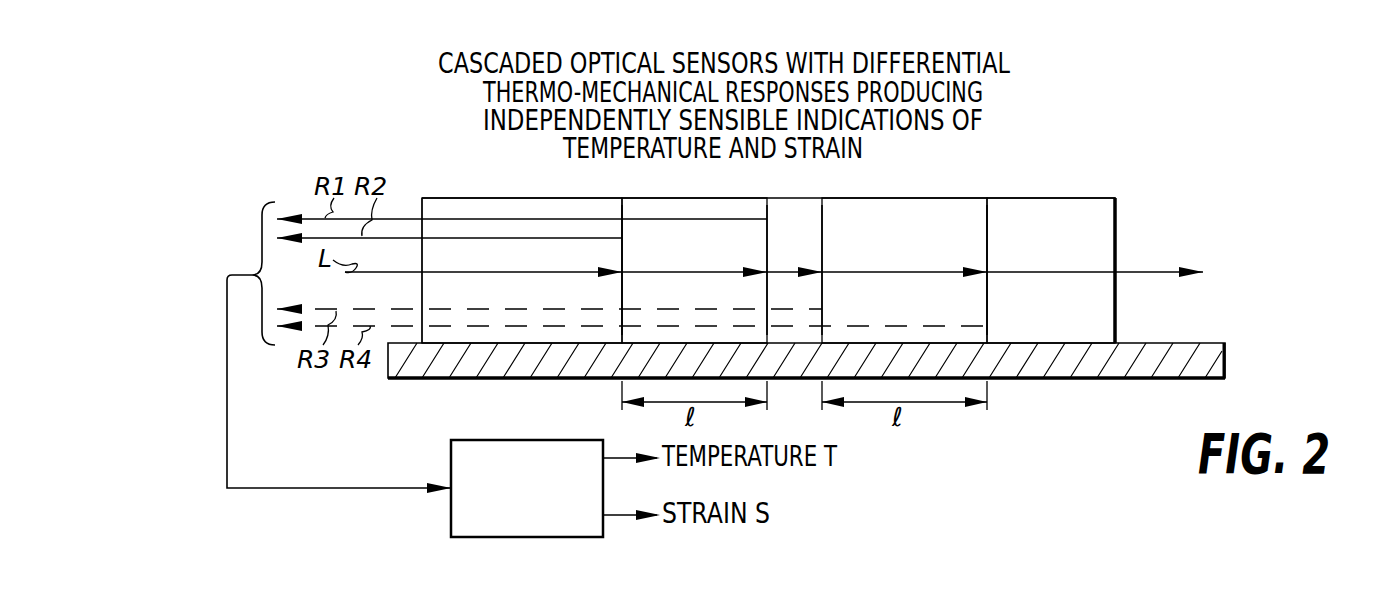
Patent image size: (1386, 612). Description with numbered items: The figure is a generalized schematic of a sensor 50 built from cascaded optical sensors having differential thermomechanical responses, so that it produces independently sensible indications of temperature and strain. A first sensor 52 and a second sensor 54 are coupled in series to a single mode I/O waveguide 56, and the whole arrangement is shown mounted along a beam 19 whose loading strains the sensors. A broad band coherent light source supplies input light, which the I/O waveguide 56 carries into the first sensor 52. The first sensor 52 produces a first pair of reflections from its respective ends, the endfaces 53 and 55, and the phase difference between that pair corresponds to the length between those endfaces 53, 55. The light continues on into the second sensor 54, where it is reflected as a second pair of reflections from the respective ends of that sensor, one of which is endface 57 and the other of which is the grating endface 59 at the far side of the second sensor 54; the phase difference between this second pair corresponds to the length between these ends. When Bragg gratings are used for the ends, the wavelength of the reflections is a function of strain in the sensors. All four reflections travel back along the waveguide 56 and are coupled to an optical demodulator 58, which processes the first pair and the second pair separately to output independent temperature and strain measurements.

The beam 19 is at (1198, 343).
The sensor 50 is at (1128, 182).
The first sensor 52 is at (684, 196).
The endface of first sensor 53 is at (622, 255).
The second sensor 54 is at (908, 196).
The endface of first sensor 55 is at (767, 242).
The single mode I/O waveguide 56 is at (475, 196).
The endface of second sensor 57 is at (820, 243).
The optical demodulator 58 is at (488, 440).
The fourth grating 59 is at (988, 246).